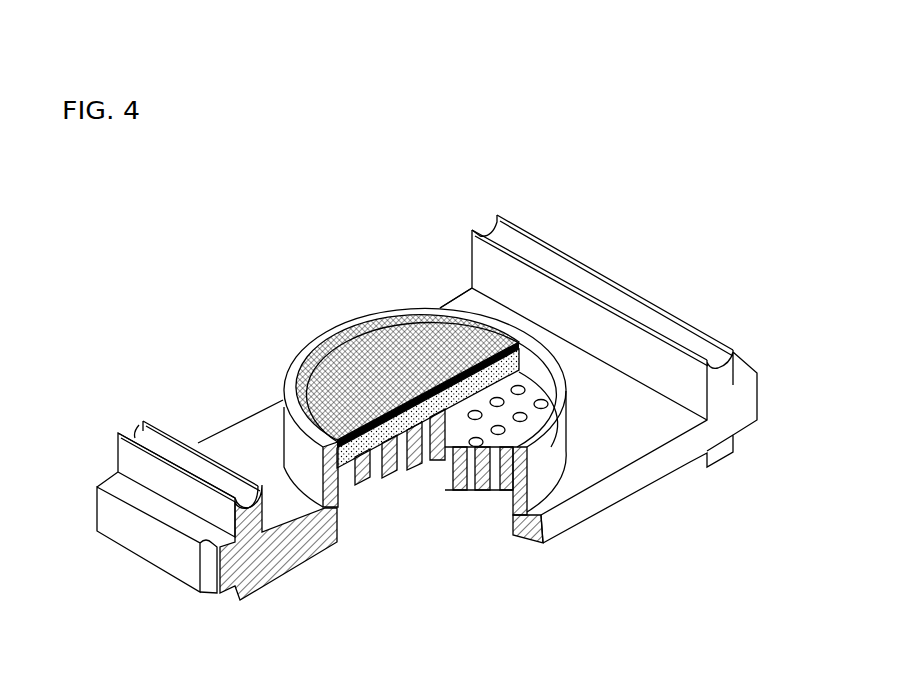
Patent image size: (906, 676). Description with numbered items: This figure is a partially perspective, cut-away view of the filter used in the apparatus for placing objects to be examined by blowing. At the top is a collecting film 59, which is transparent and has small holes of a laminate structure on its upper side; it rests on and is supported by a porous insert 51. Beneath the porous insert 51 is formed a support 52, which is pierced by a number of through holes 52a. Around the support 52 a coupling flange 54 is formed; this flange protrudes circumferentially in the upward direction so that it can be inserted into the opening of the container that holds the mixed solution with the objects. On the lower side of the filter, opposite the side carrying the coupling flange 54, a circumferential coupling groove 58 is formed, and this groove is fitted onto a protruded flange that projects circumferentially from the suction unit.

The porous insert 51 is at (372, 338).
The support 52 is at (553, 452).
The through holes 52a is at (455, 480).
The coupling flange 54 is at (309, 360).
The circumferential coupling groove 58 is at (343, 511).
The collecting film 59 is at (492, 345).